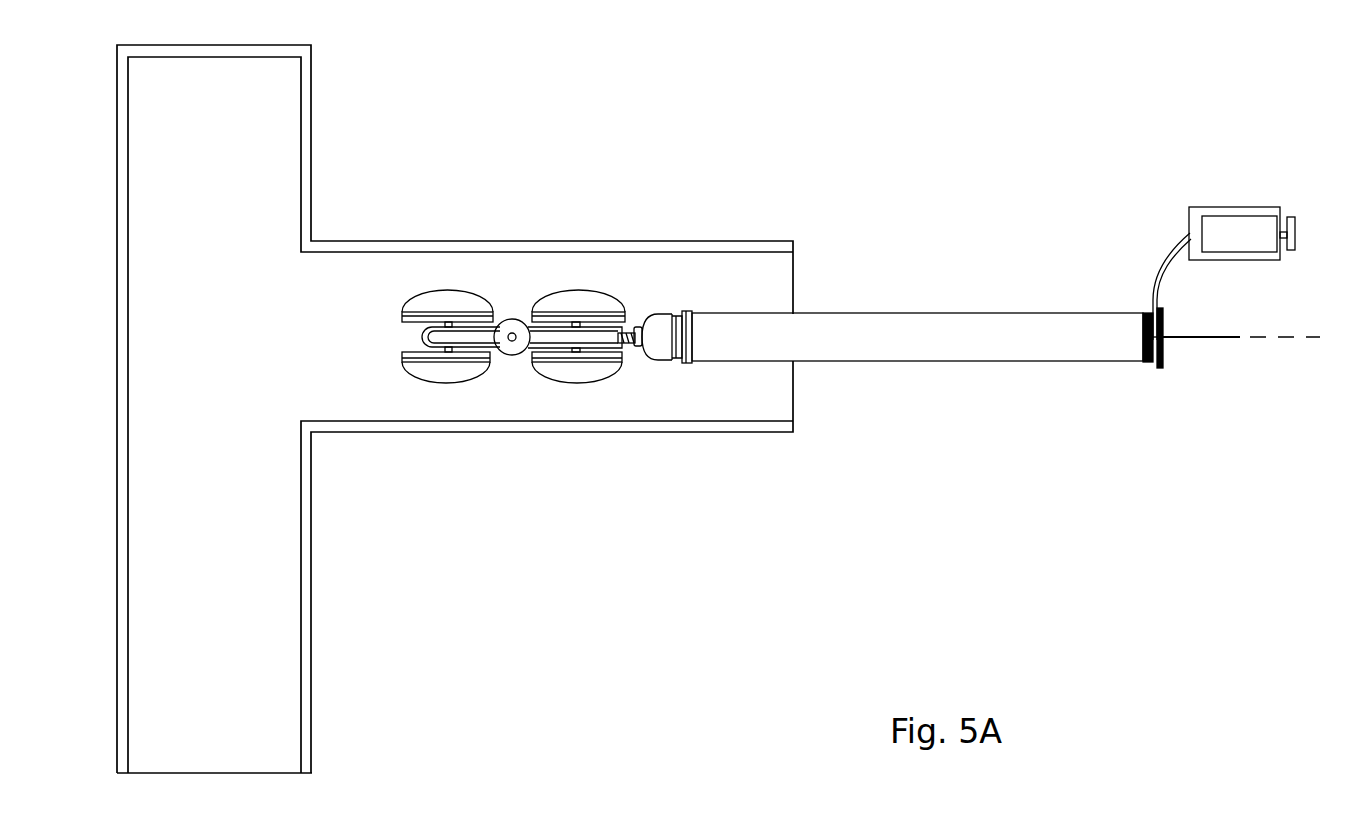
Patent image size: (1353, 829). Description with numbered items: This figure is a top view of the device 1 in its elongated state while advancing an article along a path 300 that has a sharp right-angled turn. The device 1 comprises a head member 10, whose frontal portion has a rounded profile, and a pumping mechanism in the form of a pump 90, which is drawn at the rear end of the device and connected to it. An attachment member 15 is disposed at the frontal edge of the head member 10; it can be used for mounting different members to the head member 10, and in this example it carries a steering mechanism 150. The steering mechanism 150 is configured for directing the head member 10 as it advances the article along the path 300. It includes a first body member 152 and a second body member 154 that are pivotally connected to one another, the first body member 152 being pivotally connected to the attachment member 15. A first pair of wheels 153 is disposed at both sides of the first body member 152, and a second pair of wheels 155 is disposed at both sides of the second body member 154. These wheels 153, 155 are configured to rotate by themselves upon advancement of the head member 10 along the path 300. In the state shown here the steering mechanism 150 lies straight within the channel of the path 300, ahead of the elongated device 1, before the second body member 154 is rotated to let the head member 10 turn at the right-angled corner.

The device 1 is at (893, 265).
The head member 10 is at (660, 330).
The attachment member 15 is at (638, 330).
The pump 90 is at (1236, 243).
The steering mechanism 150 is at (508, 290).
The first body member 152 is at (600, 338).
The first pair of wheels 153 is at (563, 312).
The second body member 154 is at (473, 338).
The second pair of wheels 155 is at (413, 354).
The path 300 is at (307, 378).